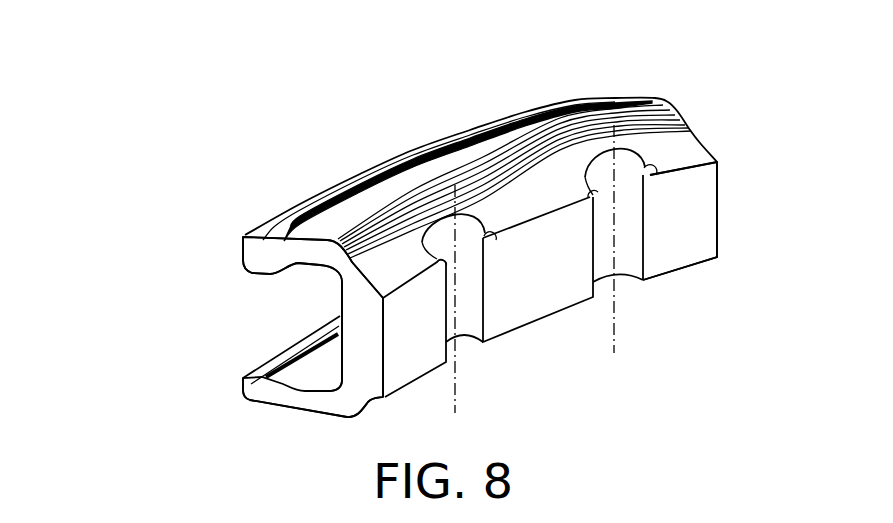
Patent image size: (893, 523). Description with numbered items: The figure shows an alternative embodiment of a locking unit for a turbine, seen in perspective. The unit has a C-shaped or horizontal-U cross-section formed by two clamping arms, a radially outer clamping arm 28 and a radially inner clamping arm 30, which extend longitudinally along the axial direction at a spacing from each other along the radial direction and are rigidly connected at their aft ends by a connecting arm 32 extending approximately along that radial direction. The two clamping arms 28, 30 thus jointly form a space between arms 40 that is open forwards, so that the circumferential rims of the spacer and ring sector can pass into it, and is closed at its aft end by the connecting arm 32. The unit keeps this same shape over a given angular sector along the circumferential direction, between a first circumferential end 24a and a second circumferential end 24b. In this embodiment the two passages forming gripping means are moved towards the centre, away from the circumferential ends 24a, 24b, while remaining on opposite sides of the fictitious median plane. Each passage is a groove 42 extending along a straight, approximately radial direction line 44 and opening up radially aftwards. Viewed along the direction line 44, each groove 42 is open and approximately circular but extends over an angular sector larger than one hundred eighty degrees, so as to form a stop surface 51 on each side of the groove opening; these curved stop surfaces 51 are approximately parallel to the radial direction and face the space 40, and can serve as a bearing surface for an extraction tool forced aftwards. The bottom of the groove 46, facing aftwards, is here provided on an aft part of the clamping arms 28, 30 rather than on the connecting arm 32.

The first circumferential end 24a is at (226, 247).
The second circumferential end 24b is at (700, 90).
The radially outer clamping arm 28 is at (284, 253).
The radially inner clamping arm 30 is at (283, 395).
The connecting arm 32 is at (688, 147).
The space between arms 40 is at (290, 302).
The groove 42 is at (462, 226).
The direction line 44 is at (455, 401).
The bottom of the groove 46 is at (427, 227).
The stop surface 51 is at (445, 268).